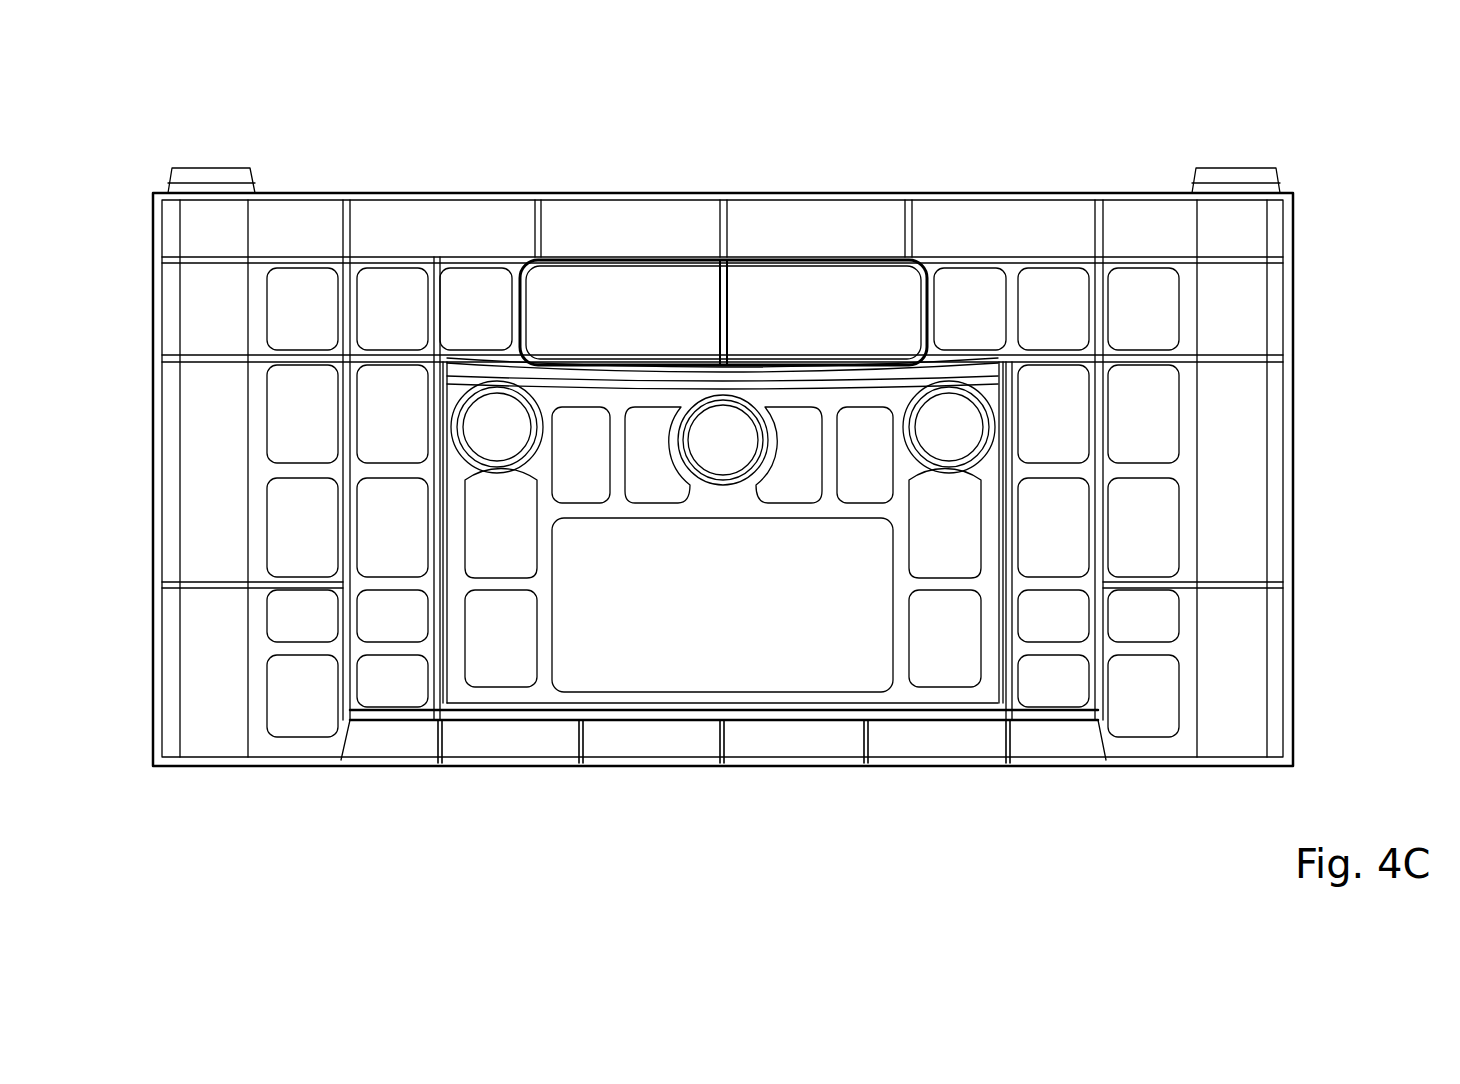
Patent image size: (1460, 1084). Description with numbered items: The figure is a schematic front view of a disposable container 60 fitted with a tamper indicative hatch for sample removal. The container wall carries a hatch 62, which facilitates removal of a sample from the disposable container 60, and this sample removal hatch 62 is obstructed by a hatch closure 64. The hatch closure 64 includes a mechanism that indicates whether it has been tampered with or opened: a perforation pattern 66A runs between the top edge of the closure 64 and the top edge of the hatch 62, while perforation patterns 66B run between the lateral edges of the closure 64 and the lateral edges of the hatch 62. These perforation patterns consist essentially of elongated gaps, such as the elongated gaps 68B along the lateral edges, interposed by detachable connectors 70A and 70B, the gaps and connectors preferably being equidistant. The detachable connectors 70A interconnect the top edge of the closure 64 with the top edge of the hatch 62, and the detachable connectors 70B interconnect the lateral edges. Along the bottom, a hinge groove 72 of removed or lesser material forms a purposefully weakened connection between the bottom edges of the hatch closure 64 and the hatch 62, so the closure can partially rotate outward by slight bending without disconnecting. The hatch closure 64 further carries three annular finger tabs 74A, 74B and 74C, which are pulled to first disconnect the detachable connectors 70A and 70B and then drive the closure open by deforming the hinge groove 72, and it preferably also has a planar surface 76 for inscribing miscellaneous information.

The disposable container 60 is at (1358, 170).
The hatch 62 is at (860, 792).
The hatch closure 64 is at (550, 397).
The perforation pattern 66A is at (583, 345).
The perforation patterns 66B is at (410, 640).
The elongated gaps 68B is at (734, 379).
The detachable connectors 70A is at (581, 374).
The detachable connectors 70B is at (461, 537).
The hinge groove 72 is at (829, 712).
The annular finger tab 74A is at (462, 385).
The annular finger tab 74B is at (990, 390).
The annular finger tab 74C is at (683, 483).
The planar surface 76 is at (812, 640).